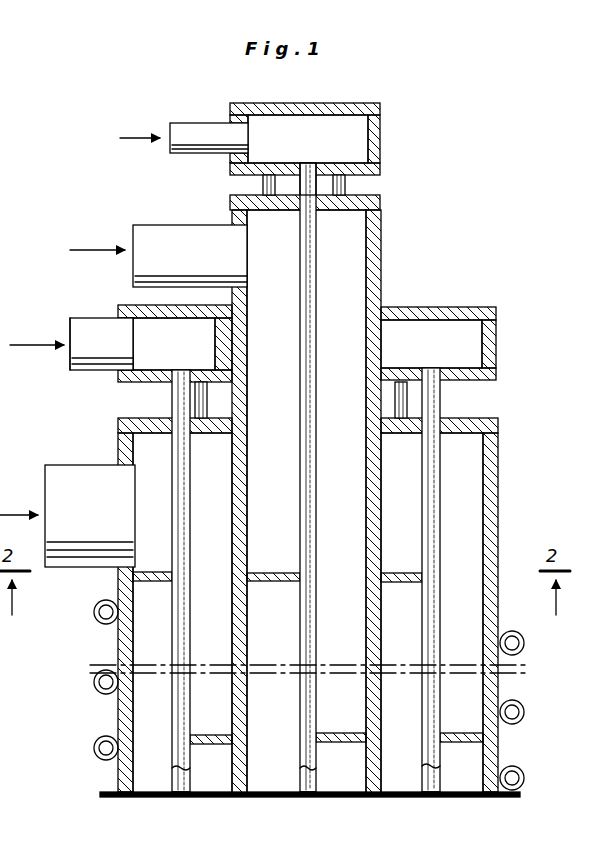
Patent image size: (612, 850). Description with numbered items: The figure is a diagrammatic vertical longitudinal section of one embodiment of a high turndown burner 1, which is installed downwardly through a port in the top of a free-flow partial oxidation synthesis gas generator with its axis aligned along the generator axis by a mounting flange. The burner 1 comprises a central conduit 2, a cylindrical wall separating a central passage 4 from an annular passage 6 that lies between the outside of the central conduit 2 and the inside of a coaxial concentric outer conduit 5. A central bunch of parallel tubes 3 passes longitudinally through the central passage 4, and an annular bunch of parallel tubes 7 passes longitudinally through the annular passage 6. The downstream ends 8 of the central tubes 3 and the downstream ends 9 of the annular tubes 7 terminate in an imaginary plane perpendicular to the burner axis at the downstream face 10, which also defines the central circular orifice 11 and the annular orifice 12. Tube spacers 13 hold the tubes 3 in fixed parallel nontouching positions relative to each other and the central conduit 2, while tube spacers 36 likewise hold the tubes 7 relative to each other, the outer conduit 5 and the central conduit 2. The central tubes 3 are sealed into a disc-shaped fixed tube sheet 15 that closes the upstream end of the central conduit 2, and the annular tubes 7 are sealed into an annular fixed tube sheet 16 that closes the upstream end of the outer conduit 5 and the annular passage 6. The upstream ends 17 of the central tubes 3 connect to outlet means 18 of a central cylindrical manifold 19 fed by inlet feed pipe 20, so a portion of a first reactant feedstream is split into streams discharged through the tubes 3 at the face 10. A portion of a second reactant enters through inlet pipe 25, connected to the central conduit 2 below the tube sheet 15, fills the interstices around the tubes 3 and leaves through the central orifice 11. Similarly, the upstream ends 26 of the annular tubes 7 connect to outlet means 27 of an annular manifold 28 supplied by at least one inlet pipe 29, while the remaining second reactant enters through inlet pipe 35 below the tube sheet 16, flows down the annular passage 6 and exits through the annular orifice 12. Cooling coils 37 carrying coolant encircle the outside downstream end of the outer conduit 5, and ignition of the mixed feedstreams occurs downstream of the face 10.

The burner 1 is at (500, 474).
The central conduit 2 is at (380, 228).
The central bunch of parallel tubes 3 is at (262, 186).
The central passage 4 is at (345, 276).
The outer conduit 5 is at (500, 692).
The annular passage 6 is at (148, 444).
The annular bunch of parallel tubes 7 is at (207, 404).
The downstream ends of central bunch of tubes 8 is at (320, 798).
The downstream ends of annular bunch of tubes 9 is at (186, 798).
The downstream face 10 is at (112, 794).
The central circular orifice 11 is at (305, 798).
The annular orifice 12 is at (130, 798).
The tube spacers 13 is at (268, 573).
The fixed tube sheet 15 is at (345, 200).
The annular fixed tube sheet 16 is at (138, 412).
The upstream ends of central bunch of tubes 17 is at (312, 162).
The outlet means 18 is at (338, 162).
The central cylindrical manifold 19 is at (280, 132).
The inlet feed pipe 20 is at (184, 123).
The inlet pipe 25 is at (162, 225).
The upstream ends of annular bunch of tubes 26 is at (187, 368).
The outlet means 27 is at (148, 352).
The annular-shaped manifold 28 is at (157, 316).
The inlet pipe 29 is at (112, 310).
The inlet pipe 35 is at (66, 478).
The tube spacers 36 is at (150, 572).
The cooling coils 37 is at (102, 626).